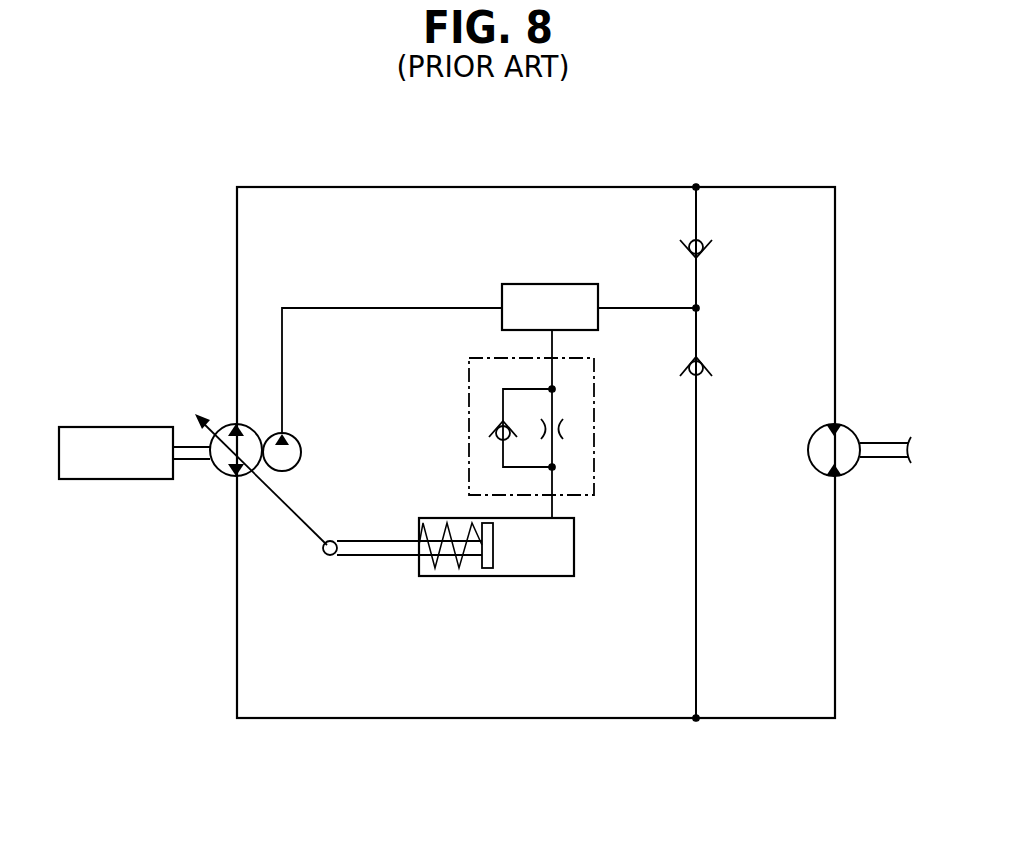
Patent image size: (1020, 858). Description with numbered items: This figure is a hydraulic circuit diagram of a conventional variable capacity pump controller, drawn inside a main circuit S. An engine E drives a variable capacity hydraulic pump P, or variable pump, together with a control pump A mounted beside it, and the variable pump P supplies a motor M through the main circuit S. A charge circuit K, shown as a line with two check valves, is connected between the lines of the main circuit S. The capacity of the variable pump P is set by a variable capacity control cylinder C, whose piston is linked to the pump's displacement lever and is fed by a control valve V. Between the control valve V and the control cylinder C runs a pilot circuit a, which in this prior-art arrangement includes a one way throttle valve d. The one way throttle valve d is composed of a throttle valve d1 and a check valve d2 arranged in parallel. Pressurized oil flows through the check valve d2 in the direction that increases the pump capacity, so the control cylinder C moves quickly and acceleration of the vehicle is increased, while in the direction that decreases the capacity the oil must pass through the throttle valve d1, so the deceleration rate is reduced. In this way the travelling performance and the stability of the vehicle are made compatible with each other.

The main circuit S is at (333, 187).
The control valve V is at (565, 284).
The engine E is at (122, 427).
The variable capacity hydraulic pump P is at (216, 469).
The control pump A is at (297, 439).
The charge circuit K is at (703, 320).
The motor M is at (850, 475).
The variable capacity control cylinder C is at (525, 576).
The one way throttle valve d is at (594, 495).
The throttle valve d1 is at (567, 430).
The check valve d2 is at (497, 422).
The pilot circuit a is at (550, 347).